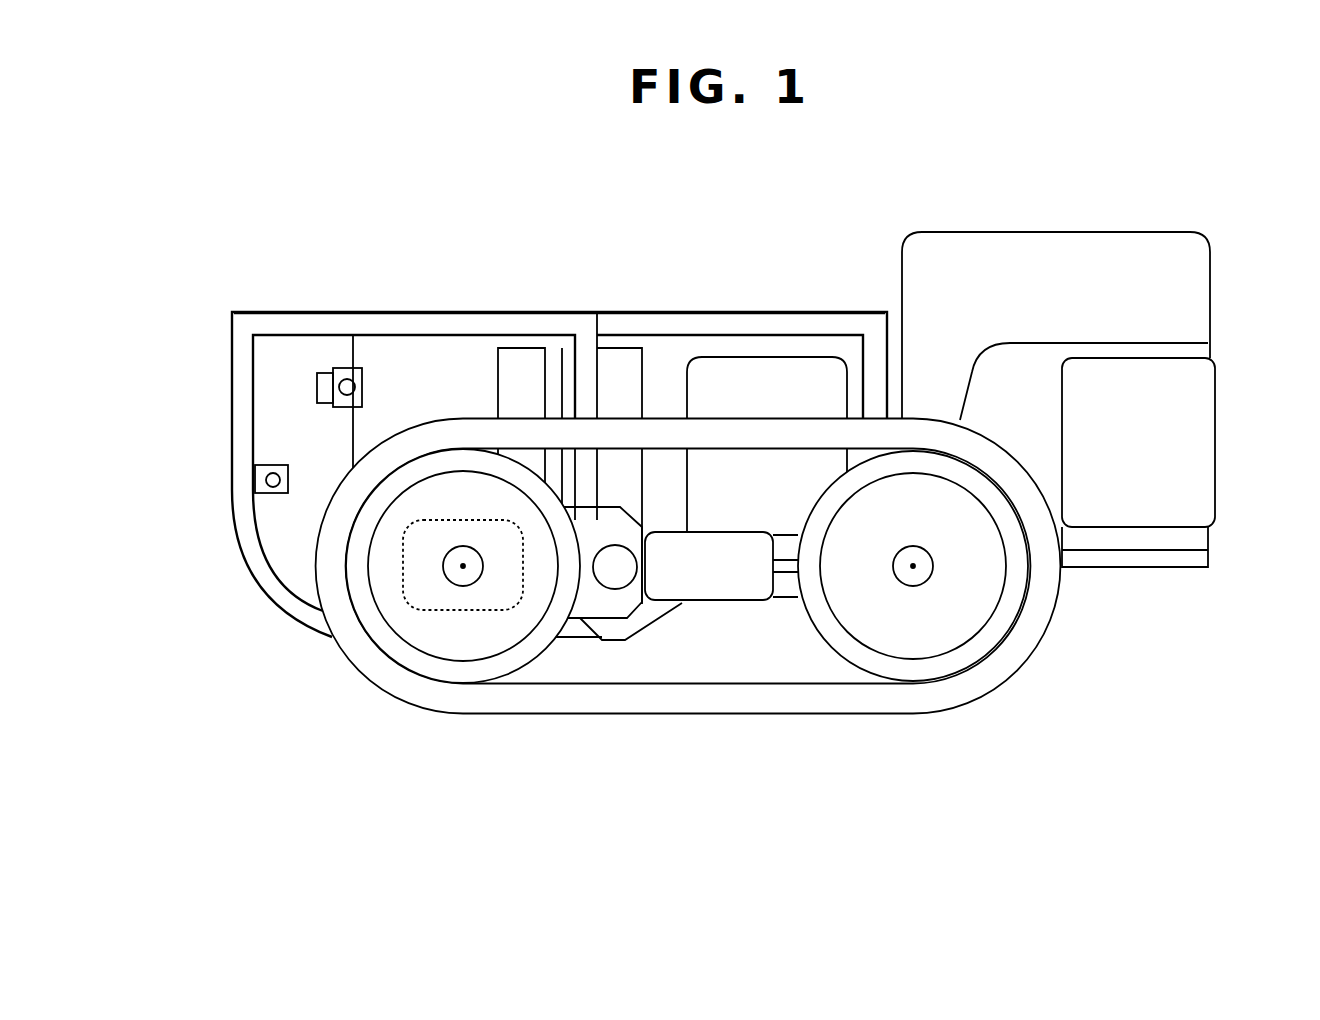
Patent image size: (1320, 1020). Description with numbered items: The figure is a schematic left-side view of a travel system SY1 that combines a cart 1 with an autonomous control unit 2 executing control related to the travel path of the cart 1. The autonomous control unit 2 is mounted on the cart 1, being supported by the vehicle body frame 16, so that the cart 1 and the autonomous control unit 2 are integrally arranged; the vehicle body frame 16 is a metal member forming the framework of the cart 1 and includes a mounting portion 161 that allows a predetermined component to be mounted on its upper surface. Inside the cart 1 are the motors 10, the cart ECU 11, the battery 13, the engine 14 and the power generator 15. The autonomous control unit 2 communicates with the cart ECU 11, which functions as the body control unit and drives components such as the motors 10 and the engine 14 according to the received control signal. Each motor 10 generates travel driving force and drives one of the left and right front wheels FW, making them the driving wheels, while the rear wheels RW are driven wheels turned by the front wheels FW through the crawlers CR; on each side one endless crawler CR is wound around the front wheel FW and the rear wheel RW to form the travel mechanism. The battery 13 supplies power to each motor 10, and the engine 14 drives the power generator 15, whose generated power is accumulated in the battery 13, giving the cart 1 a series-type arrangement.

The system SY1 is at (1110, 205).
The cart 1 is at (264, 240).
The autonomous control unit 2 is at (525, 348).
The motor 10 is at (403, 583).
The cart ECU 11 is at (605, 348).
The battery 13 is at (727, 357).
The engine 14 is at (975, 230).
The power generator 15 is at (1217, 417).
The vehicle body frame 16 is at (208, 309).
The mounting portion 161 is at (360, 311).
The front wheel FW is at (520, 667).
The rear wheel RW is at (855, 668).
The crawler CR is at (750, 713).